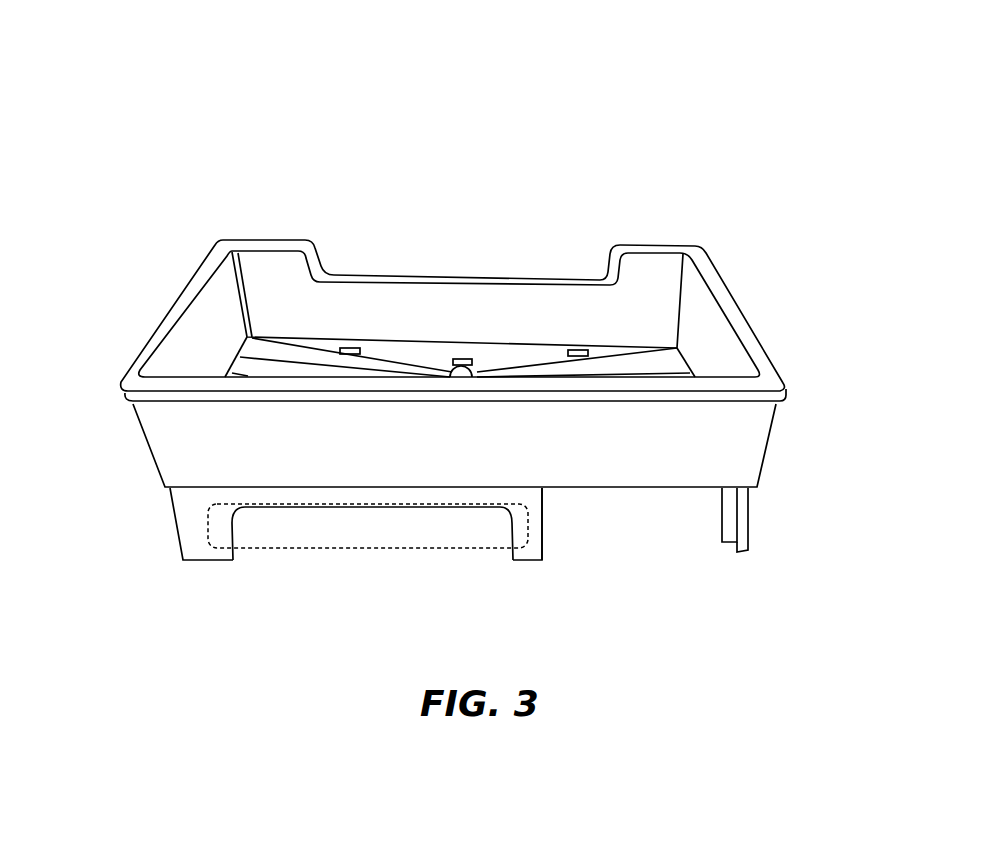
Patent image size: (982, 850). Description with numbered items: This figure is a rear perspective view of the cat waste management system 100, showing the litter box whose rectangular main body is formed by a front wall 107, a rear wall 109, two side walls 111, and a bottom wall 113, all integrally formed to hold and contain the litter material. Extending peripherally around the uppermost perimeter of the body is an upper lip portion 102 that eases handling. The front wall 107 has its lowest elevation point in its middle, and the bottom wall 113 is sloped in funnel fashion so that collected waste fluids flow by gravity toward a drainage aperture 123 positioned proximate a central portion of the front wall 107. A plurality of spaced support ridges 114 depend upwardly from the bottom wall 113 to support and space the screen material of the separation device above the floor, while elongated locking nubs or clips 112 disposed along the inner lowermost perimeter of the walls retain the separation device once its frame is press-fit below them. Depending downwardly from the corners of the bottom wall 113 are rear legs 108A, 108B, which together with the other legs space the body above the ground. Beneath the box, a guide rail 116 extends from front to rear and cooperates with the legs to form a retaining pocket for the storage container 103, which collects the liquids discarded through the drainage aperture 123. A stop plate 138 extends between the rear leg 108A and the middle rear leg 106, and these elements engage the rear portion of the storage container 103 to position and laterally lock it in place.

The cat waste management system 100 is at (232, 82).
The upper lip portion 102 is at (131, 409).
The storage container 103 is at (322, 528).
The middle rear leg 106 is at (533, 532).
The front wall 107 is at (294, 268).
The rear leg 108A is at (190, 530).
The rear leg 108B is at (750, 517).
The rear wall 109 is at (722, 461).
The side walls 111 is at (188, 332).
The locking nubs or clips 112 is at (352, 346).
The bottom wall 113 is at (662, 364).
The support ridges 114 is at (272, 347).
The guide rail 116 is at (542, 507).
The drainage aperture 123 is at (482, 365).
The stop plate 138 is at (380, 495).